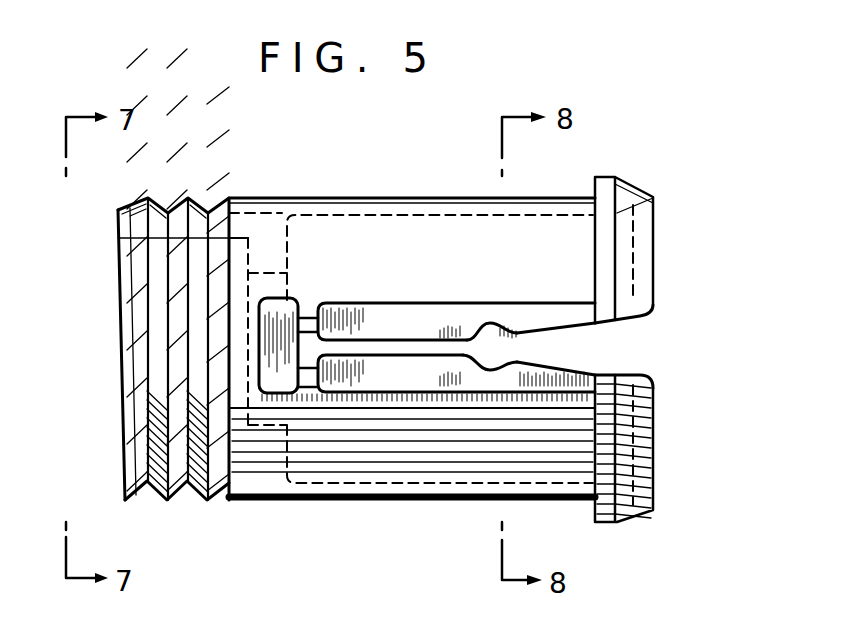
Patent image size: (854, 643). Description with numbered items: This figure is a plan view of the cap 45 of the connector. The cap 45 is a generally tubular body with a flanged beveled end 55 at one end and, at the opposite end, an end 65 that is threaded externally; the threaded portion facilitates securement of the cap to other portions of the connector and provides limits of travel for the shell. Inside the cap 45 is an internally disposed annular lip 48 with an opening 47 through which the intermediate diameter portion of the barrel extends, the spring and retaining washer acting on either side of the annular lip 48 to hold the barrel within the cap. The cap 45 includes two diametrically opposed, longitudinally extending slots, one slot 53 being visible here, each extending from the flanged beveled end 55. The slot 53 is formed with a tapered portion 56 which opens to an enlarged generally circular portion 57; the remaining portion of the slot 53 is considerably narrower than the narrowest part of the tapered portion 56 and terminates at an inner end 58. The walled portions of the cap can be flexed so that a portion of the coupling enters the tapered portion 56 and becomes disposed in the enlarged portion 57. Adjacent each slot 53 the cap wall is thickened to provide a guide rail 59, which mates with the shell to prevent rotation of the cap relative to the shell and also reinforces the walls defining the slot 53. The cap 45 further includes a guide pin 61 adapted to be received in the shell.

The cap 45 is at (294, 150).
The opening 47 is at (298, 418).
The annular lip 48 is at (264, 447).
The slot 53 is at (585, 347).
The flanged beveled end 55 is at (655, 223).
The tapered portion 56 is at (655, 382).
The enlarged generally circular portion 57 is at (490, 350).
The inner end 58 is at (373, 350).
The guide rail 59 is at (422, 327).
The guide pin 61 is at (275, 280).
The threaded end 65 is at (130, 340).